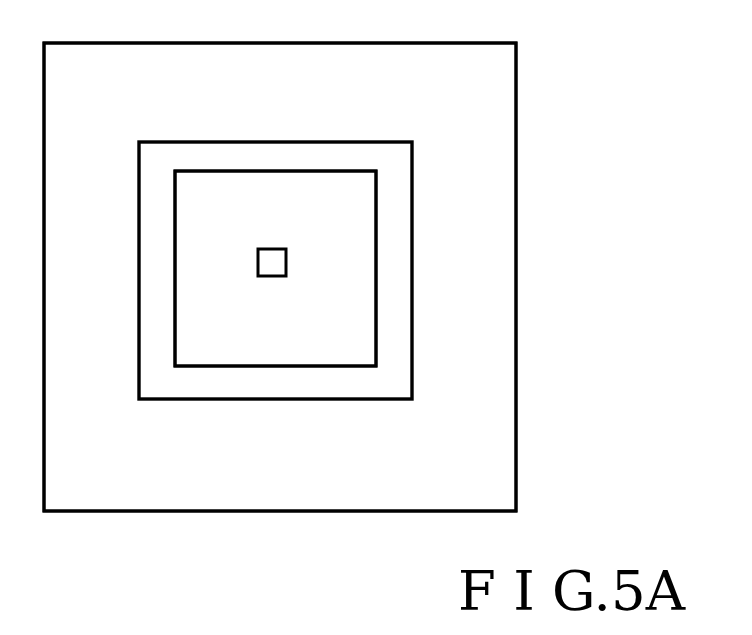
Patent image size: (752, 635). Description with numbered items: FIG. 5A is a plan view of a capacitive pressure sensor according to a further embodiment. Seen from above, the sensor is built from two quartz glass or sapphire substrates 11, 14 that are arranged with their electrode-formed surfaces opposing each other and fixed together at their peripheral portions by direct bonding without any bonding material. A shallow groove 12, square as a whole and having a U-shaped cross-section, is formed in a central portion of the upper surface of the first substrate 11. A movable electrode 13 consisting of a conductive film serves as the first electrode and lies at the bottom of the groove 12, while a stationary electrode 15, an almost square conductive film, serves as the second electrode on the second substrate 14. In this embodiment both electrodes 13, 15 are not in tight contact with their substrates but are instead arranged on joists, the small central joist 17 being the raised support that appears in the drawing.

The quartz glass or sapphire substrate 11 is at (516, 233).
The quartz glass or sapphire substrate 14 is at (280, 277).
The groove 12 is at (412, 300).
The movable electrode 13 is at (376, 352).
The stationary electrode 15 is at (275, 268).
The joist 17 is at (275, 276).